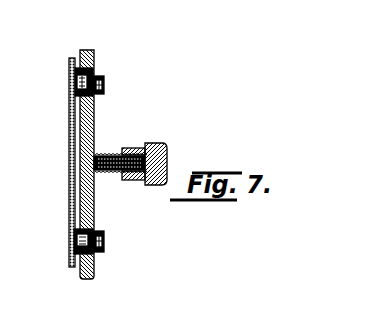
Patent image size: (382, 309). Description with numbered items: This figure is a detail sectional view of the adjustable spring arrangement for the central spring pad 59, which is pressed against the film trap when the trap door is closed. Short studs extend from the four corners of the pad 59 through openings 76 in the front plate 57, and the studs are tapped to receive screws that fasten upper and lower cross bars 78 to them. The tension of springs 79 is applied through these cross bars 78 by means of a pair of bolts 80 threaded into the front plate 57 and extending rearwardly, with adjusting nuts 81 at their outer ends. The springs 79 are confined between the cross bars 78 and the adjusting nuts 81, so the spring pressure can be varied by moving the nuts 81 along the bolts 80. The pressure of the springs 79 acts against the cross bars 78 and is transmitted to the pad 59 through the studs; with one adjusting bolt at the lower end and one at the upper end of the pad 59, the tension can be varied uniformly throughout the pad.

The front plate 57 is at (81, 50).
The central spring pad 59 is at (69, 155).
The openings 76 is at (92, 67).
The cross bars 78 is at (97, 219).
The springs 79 is at (107, 156).
The bolts 80 is at (167, 162).
The adjusting nuts 81 is at (158, 143).